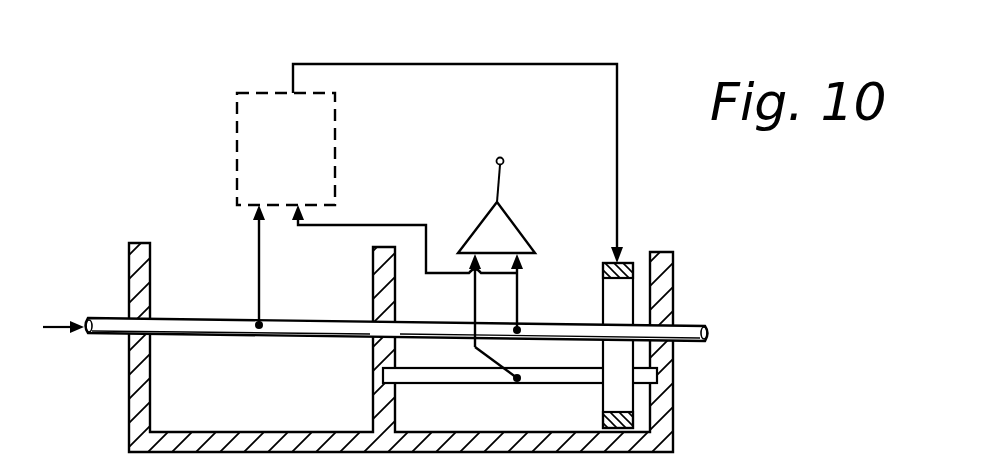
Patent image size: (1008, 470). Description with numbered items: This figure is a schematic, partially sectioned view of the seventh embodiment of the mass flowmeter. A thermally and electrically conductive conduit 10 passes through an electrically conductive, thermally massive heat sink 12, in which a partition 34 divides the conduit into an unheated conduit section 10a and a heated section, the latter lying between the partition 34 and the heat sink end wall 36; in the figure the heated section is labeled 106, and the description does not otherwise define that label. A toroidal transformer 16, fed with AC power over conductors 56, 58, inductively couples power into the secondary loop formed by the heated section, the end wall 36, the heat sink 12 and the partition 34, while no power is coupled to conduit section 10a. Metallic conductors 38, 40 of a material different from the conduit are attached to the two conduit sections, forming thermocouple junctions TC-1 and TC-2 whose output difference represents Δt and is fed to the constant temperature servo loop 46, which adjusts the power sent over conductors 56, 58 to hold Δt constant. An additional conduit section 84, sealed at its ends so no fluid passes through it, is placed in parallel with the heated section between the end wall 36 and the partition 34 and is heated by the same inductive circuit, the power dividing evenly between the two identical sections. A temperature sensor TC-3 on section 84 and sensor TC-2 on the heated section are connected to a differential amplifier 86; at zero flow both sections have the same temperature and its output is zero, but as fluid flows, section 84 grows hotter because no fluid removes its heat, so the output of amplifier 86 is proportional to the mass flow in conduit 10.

The conduit 10 is at (694, 316).
The conduit section 10a is at (246, 363).
The heat sink 12 is at (125, 414).
The toroidal transformer 16 is at (602, 420).
The partition 34 is at (372, 404).
The heat sink end wall 36 is at (668, 404).
The metallic conductor 38 is at (261, 252).
The metallic conductor 40 is at (370, 224).
The constant temperature servo loop 46 is at (335, 135).
The conductor 56 is at (619, 160).
The conductor 58 is at (455, 107).
The additional conduit section 84 is at (430, 374).
The differential amplifier 86 is at (510, 210).
The tube section in second chamber 106 is at (588, 337).
The thermocouple junction TC-1 is at (263, 323).
The thermocouple junction TC-2 is at (521, 326).
The temperature sensor TC-3 is at (518, 383).